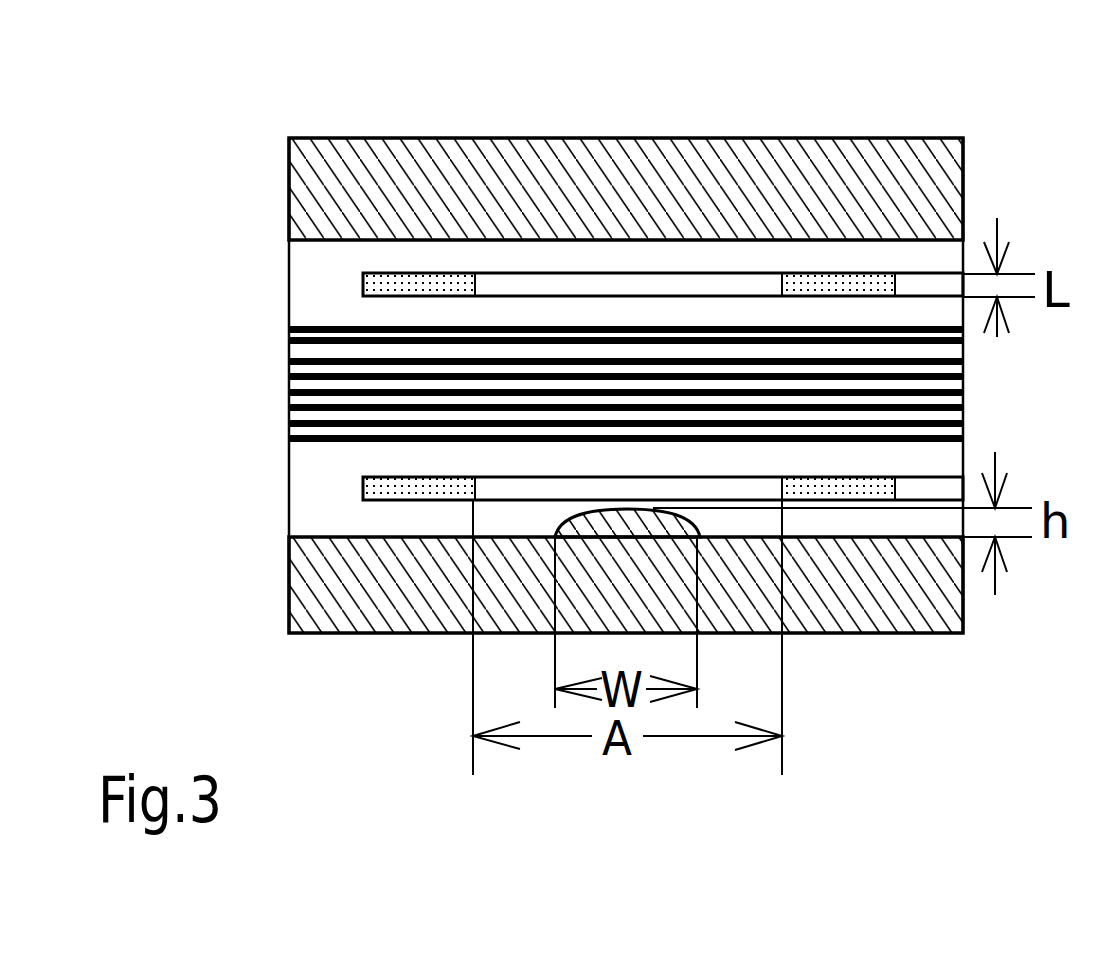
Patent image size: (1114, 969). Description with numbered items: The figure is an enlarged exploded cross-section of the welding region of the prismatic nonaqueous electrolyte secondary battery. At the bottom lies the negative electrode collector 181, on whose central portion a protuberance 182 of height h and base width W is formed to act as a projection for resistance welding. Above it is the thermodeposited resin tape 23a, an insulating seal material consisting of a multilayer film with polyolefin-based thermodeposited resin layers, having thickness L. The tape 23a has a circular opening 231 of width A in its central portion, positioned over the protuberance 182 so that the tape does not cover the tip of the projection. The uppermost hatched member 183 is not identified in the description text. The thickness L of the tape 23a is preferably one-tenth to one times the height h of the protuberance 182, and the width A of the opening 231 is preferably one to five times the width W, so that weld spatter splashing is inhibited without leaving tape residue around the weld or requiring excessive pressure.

The upper substrate 183 is at (918, 173).
The negative electrode collector 181 is at (323, 612).
The protuberance 182 is at (616, 527).
The opening 231 is at (728, 485).
The thermodeposited resin tape 23a is at (362, 283).